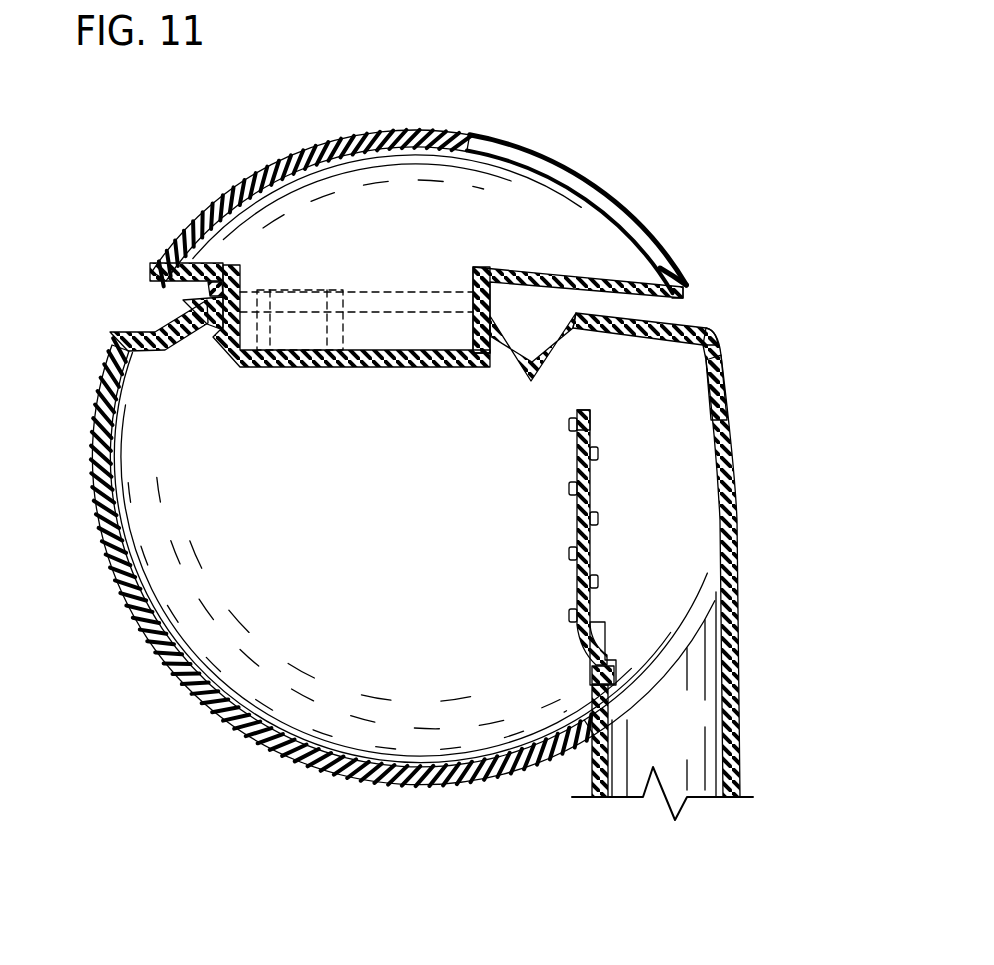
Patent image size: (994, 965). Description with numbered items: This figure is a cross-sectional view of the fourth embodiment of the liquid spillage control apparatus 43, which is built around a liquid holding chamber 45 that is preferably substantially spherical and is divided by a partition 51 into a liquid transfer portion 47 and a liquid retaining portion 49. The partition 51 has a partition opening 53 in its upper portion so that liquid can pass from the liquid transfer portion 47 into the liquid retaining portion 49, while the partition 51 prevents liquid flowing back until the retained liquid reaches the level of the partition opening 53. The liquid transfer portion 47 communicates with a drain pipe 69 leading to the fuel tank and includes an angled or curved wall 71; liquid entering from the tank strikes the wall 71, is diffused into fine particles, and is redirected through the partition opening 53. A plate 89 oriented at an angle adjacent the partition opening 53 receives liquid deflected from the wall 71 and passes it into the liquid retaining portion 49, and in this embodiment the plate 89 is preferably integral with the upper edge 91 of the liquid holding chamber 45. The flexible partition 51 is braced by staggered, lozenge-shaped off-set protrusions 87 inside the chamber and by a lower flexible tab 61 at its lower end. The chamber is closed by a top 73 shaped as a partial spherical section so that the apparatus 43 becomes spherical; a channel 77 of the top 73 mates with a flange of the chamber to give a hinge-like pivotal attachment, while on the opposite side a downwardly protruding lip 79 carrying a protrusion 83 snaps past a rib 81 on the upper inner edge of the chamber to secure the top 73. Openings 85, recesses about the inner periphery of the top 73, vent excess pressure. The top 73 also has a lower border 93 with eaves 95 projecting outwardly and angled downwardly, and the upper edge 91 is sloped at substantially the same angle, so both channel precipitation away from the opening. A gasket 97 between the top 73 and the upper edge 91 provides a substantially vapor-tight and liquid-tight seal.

The liquid spillage control apparatus 43 is at (135, 690).
The liquid holding chamber 45 is at (312, 772).
The liquid transfer portion 47 is at (712, 470).
The liquid retaining portion 49 is at (160, 540).
The partition 51 is at (577, 570).
The partition opening 53 is at (573, 385).
The lower flexible tab 61 is at (625, 655).
The drain pipe 69 is at (712, 742).
The wall 71 is at (733, 345).
The top 73 is at (360, 135).
The channel 77 is at (665, 300).
The lip 79 is at (268, 333).
The rib 81 is at (200, 307).
The protrusion 83 is at (215, 340).
The openings 85 is at (318, 322).
The off-set protrusions 87 is at (577, 622).
The plate 89 is at (555, 350).
The upper edge 91 is at (700, 325).
The lower border 93 is at (680, 272).
The eaves 95 is at (690, 292).
The gasket 97 is at (205, 290).